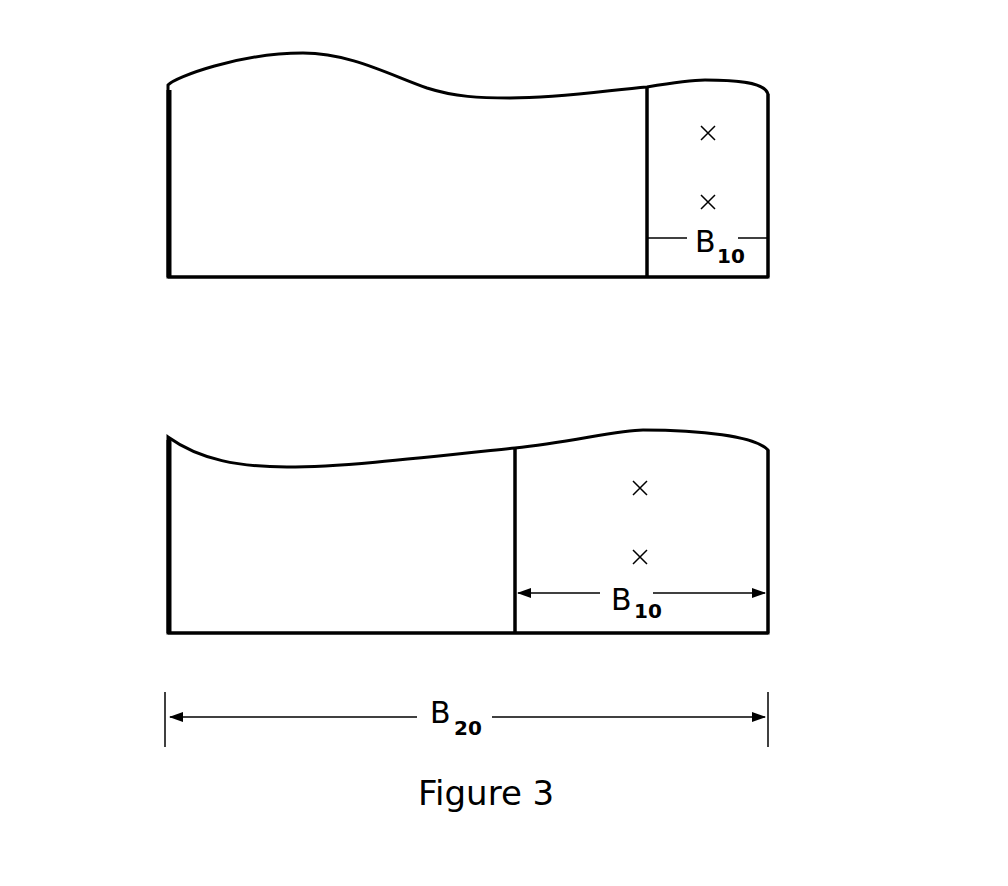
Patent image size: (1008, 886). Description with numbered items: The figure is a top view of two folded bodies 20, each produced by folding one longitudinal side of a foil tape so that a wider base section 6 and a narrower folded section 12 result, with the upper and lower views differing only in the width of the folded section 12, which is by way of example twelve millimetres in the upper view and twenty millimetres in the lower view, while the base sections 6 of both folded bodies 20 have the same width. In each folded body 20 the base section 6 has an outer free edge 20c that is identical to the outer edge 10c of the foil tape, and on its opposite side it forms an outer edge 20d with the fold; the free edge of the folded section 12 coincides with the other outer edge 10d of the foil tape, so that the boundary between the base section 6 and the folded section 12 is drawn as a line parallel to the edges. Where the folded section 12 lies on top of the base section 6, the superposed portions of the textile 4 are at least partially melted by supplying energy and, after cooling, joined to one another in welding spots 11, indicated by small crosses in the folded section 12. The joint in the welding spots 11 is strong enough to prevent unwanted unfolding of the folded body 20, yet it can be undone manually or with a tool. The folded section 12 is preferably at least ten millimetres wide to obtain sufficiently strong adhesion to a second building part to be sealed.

The textile 4 is at (408, 258).
The base section 6 is at (455, 249).
The outer edge of the foil tape 10c is at (170, 222).
The outer edge of the foil tape 10d is at (645, 165).
The welding spots 11 is at (714, 126).
The folded section 12 is at (748, 129).
The folded body 20 is at (809, 127).
The outer free edge 20c is at (168, 173).
The outer edge 20d is at (770, 168).